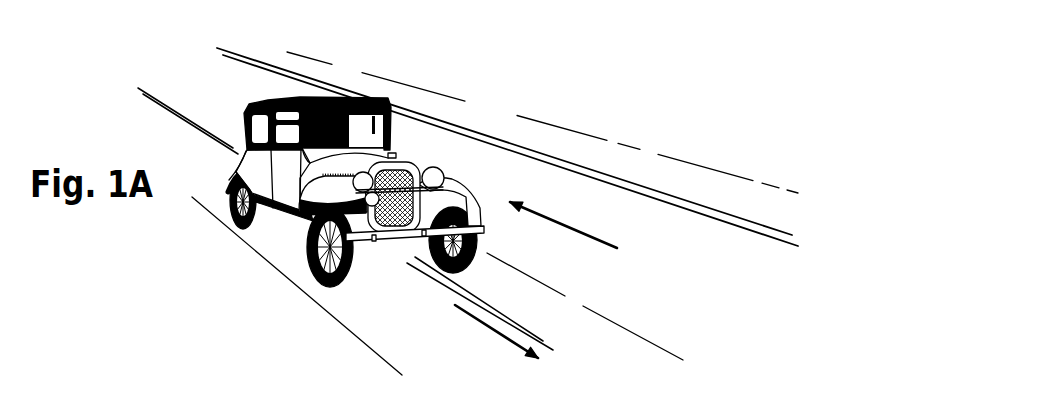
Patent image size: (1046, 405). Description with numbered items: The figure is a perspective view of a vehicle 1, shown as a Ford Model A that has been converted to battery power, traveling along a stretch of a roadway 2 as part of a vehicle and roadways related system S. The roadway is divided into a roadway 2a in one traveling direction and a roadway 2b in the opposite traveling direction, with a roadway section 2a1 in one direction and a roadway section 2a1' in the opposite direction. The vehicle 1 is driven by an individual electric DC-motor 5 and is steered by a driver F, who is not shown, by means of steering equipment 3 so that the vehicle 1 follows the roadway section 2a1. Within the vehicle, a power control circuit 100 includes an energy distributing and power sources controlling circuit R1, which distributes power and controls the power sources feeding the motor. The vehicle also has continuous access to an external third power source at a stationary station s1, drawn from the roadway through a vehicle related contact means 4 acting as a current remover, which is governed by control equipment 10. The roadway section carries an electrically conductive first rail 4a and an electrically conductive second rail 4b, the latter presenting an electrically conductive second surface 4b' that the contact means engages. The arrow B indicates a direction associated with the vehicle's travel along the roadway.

The vehicle 1 is at (243, 124).
The stretch of a roadway 2 is at (404, 306).
The roadway in one traveling direction 2a is at (579, 390).
The roadway section in one traveling direction 2a1 is at (496, 338).
The roadway section in an opposite direction 2a1' is at (684, 147).
The roadway in an opposite traveling direction 2b is at (283, 75).
The steering equipment 3 is at (398, 127).
The vehicle related contact means 4 is at (382, 252).
The electrical conductive first rail 4a is at (763, 238).
The electrical conductive second rail 4b is at (819, 210).
The electrical conductive second surface 4b' is at (526, 312).
The vehicle related DC-motor 5 is at (413, 154).
The control equipment for contact means 10 is at (267, 223).
The power control circuit 100 is at (465, 285).
The energy distributing and three power sources controlling circuit R1 is at (585, 281).
The driver F is at (357, 125).
The vehicle and roadways related system S is at (568, 126).
The backward direction B is at (290, 233).
The stationary station s1 is at (542, 338).